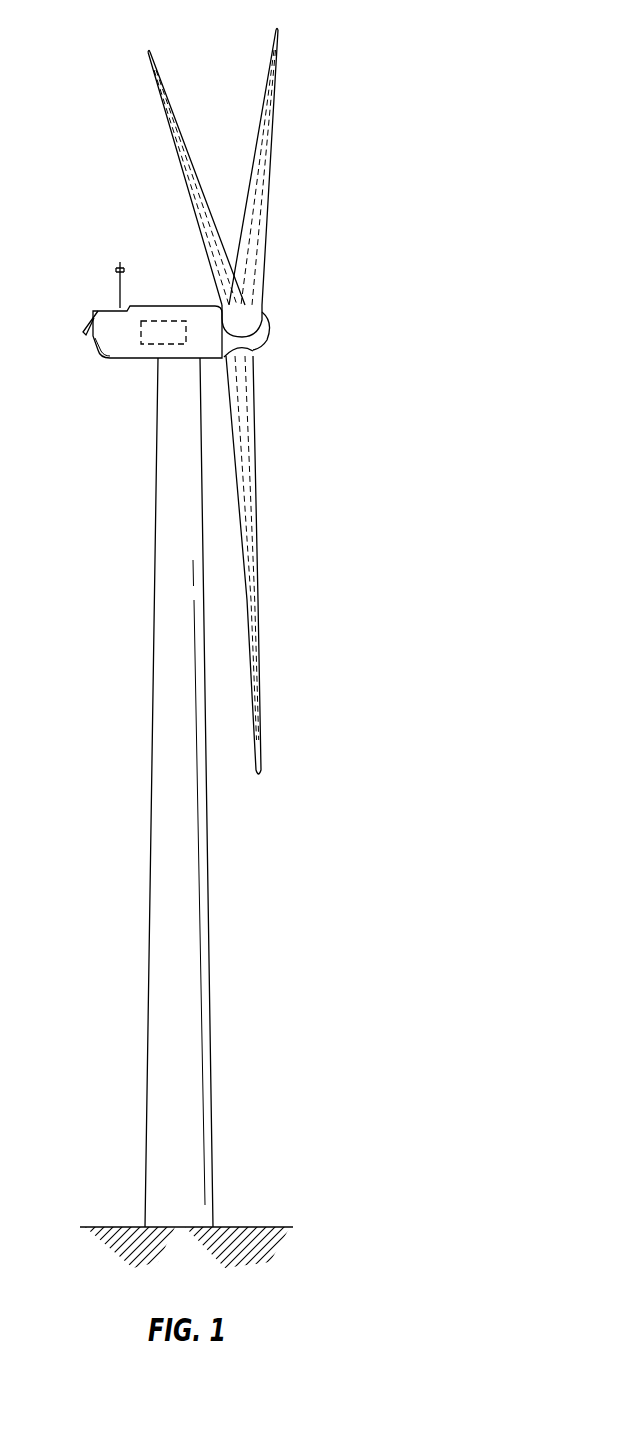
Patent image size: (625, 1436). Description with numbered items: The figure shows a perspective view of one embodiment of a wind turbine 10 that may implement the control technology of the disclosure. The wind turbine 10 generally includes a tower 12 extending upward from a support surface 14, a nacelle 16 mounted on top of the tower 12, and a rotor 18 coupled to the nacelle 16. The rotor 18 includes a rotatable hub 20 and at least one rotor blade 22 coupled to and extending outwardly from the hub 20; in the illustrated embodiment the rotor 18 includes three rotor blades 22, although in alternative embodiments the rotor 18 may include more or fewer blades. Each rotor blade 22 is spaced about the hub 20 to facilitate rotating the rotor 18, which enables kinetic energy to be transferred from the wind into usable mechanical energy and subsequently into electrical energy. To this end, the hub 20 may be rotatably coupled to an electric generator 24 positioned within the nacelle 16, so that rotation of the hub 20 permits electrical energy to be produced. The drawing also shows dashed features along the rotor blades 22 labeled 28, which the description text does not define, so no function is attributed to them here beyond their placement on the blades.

The wind turbine 10 is at (414, 132).
The tower 12 is at (172, 886).
The support surface 14 is at (122, 1227).
The nacelle 16 is at (130, 362).
The rotor 18 is at (309, 288).
The rotatable hub 20 is at (263, 327).
The rotor blade 22 is at (189, 150).
The electric generator 24 is at (168, 321).
The sensor 28 is at (188, 200).